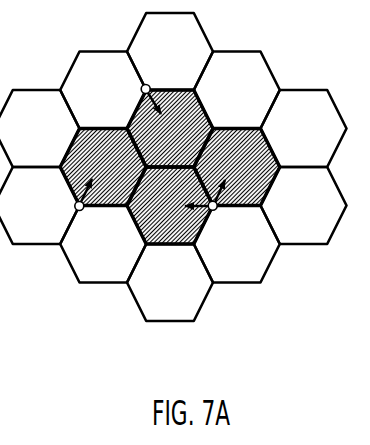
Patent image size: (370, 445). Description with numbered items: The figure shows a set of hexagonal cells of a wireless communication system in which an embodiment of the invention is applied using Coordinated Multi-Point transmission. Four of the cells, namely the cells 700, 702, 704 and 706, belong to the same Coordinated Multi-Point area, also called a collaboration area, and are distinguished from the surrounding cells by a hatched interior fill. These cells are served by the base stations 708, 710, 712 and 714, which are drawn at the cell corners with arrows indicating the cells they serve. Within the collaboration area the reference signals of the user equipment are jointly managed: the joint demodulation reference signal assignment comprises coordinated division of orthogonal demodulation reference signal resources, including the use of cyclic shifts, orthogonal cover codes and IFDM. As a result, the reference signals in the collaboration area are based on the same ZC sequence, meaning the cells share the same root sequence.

The cell 700 is at (78, 150).
The cell 702 is at (147, 218).
The cell 704 is at (260, 186).
The cell 706 is at (200, 115).
The base station 708 is at (74, 207).
The base station 710 is at (192, 246).
The base station 712 is at (217, 212).
The base station 714 is at (151, 87).